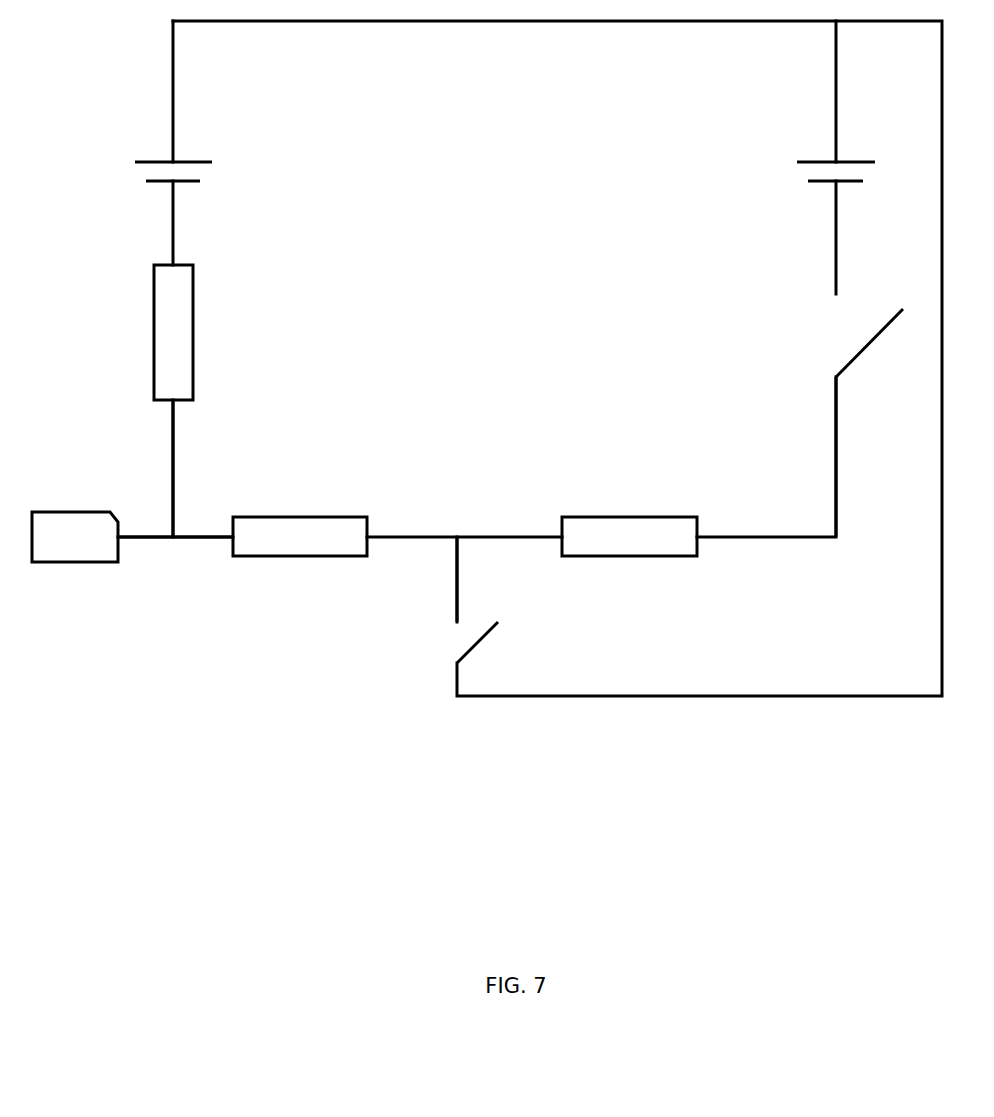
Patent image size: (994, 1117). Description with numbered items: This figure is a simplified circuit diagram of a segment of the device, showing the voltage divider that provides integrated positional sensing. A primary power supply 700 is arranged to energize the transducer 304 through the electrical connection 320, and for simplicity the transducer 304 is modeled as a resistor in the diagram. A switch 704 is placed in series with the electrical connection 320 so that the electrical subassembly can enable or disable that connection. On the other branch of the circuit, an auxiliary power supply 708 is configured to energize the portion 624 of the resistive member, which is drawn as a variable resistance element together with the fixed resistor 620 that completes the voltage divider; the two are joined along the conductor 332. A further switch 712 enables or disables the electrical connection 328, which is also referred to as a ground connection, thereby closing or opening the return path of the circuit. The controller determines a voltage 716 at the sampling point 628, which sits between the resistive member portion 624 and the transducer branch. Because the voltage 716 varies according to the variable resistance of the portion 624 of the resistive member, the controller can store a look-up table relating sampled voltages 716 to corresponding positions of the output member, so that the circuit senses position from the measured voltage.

The primary power supply 700 is at (798, 172).
The switch 704 is at (837, 335).
The electrical connection 320 is at (837, 400).
The auxiliary power supply 708 is at (210, 169).
The resistor 620 is at (155, 332).
The conductor 332 is at (175, 448).
The voltage 716 is at (75, 537).
The sampling point 628 is at (142, 538).
The portion of the resistive member 624 is at (300, 515).
The transducer 304 is at (628, 517).
The electrical connection 328 is at (458, 574).
The switch 712 is at (458, 637).